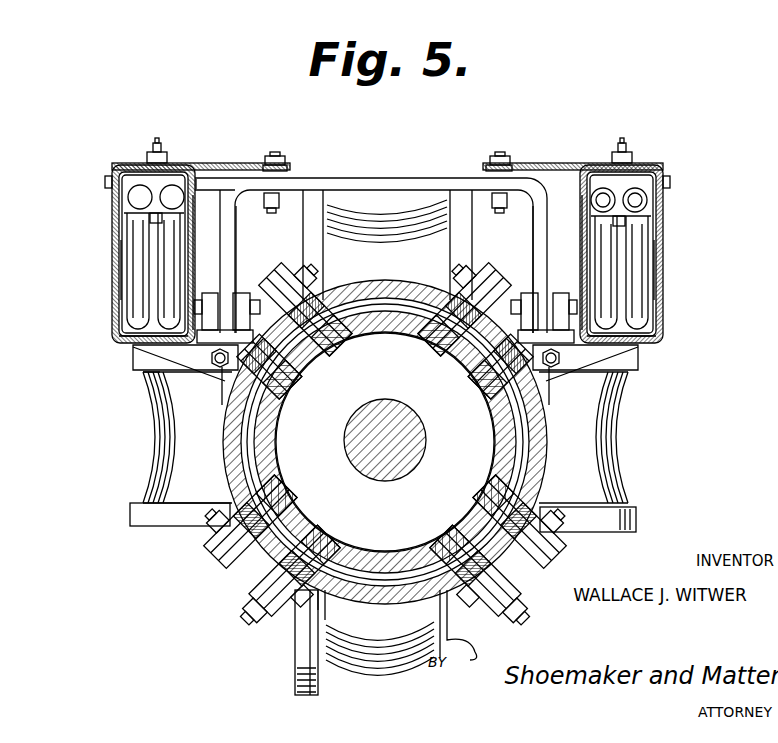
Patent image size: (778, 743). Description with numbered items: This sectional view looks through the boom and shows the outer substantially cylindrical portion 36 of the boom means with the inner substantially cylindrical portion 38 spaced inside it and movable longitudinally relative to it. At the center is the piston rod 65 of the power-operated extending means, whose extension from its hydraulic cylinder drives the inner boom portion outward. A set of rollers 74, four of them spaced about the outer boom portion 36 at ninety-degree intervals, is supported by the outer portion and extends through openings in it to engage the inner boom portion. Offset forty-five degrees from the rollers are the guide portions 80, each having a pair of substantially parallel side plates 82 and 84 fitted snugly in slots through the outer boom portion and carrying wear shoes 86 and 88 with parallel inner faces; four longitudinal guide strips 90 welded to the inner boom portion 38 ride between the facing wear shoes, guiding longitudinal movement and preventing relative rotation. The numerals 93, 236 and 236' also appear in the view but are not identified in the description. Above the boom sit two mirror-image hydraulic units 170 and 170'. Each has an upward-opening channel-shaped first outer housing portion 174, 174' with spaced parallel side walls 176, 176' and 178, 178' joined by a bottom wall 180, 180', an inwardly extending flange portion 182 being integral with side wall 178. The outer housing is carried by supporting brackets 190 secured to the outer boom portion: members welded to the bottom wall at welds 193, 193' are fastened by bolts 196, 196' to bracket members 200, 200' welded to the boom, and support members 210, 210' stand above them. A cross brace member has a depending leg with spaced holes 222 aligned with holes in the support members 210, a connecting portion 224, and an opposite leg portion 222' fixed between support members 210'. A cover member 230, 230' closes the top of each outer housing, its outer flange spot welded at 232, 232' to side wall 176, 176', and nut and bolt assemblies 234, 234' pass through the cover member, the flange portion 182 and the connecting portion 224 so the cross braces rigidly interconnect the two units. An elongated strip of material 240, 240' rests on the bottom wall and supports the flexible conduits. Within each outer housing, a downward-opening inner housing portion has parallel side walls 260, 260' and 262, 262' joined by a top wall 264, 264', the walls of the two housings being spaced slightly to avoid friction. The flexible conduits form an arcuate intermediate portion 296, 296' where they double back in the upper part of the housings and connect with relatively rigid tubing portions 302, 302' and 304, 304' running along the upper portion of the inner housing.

The outer boom portion 36 is at (548, 453).
The inner boom portion 38 is at (490, 455).
The piston rod 65 is at (374, 480).
The set of rollers 74 is at (407, 198).
The guide portion 80 is at (278, 266).
The side plate 82 is at (320, 340).
The side plate 84 is at (284, 398).
The wear shoe 86 is at (320, 362).
The wear shoe 88 is at (288, 378).
The guide strip 90 is at (314, 368).
The ring inner face 93 is at (288, 416).
The hydraulic unit 170 is at (98, 254).
The hydraulic unit 170' is at (673, 254).
The first outer housing portion 174 is at (93, 271).
The first outer housing portion 174' is at (653, 272).
The side wall 176 is at (119, 271).
The side wall 176' is at (669, 272).
The side wall 178 is at (196, 240).
The side wall 178' is at (615, 246).
The bottom wall 180 is at (159, 363).
The bottom wall 180' is at (614, 360).
The flange portion 182 is at (242, 178).
The supporting brackets 190 is at (182, 380).
The weld 193 is at (156, 377).
The weld 193' is at (614, 374).
The bolt 196 is at (204, 404).
The bolt 196' is at (570, 404).
The bracket member 200 is at (202, 379).
The bracket member 200' is at (573, 384).
The support member 210 is at (229, 304).
The support member 210' is at (538, 301).
The holes 222 is at (249, 261).
The opposite leg portion 222' is at (522, 269).
The connecting portion 224 is at (362, 178).
The cover member 230 is at (201, 137).
The cover member 230' is at (573, 148).
The spot weld 232 is at (83, 189).
The spot weld 232' is at (695, 188).
The nut and bolt assembly 234 is at (298, 144).
The nut and bolt assembly 234' is at (520, 141).
The nut 236 is at (302, 161).
The nut 236' is at (483, 150).
The strip of material 240 is at (121, 333).
The strip of material 240' is at (649, 336).
The side wall 260 is at (125, 254).
The side wall 260' is at (650, 254).
The side wall 262 is at (232, 262).
The side wall 262' is at (541, 262).
The top wall 264 is at (142, 140).
The top wall 264' is at (651, 158).
The arcuate intermediate portion 296 is at (91, 254).
The arcuate intermediate portion 296' is at (678, 280).
The rigid tubing portion 302 is at (111, 175).
The rigid tubing portion 302' is at (672, 205).
The rigid tubing portion 304 is at (197, 170).
The rigid tubing portion 304' is at (626, 169).